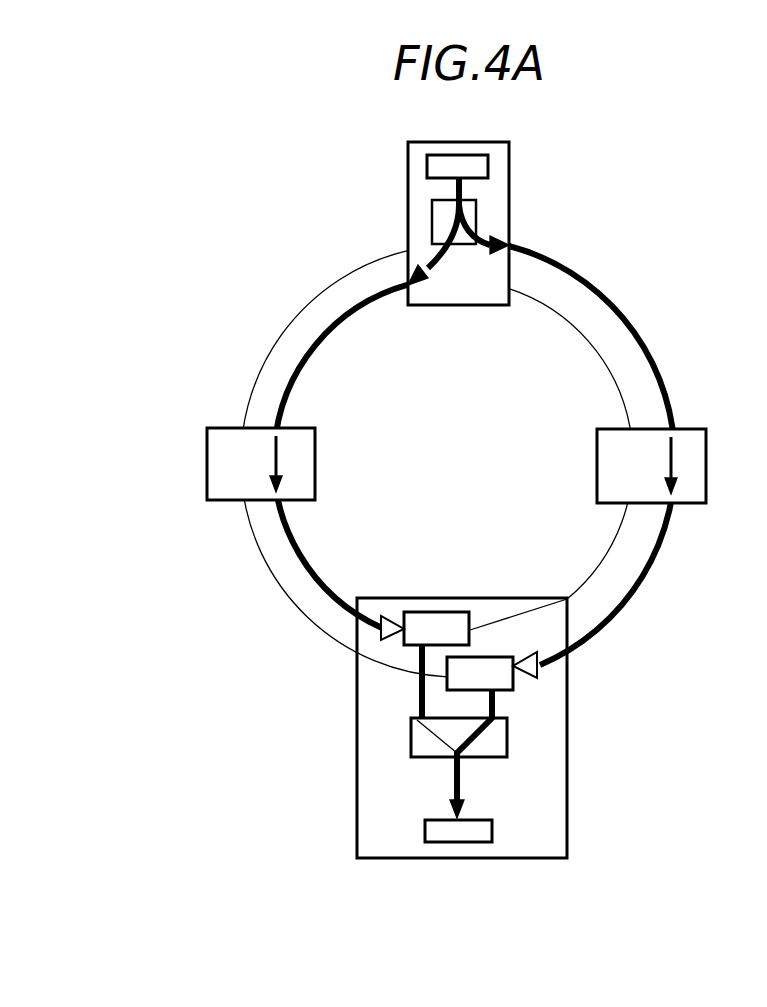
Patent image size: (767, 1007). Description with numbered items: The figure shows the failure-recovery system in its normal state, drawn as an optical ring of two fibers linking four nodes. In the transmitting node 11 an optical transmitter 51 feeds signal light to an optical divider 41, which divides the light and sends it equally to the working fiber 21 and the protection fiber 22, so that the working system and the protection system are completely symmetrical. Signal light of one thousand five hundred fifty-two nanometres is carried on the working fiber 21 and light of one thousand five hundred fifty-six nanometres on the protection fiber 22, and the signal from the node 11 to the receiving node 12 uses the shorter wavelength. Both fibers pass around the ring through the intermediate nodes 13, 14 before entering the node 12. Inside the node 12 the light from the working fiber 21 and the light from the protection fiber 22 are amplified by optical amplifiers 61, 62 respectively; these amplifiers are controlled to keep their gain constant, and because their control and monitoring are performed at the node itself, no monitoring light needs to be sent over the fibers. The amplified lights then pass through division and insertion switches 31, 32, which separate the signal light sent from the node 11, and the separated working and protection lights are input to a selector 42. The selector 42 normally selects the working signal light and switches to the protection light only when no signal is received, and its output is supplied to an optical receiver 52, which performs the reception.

The node 11 is at (458, 206).
The node 12 is at (506, 728).
The node 13 is at (229, 464).
The node 14 is at (616, 461).
The working fiber 21 is at (632, 455).
The protection fiber 22 is at (374, 456).
The division and insertion switch 31 is at (493, 672).
The division and insertion switch 32 is at (430, 627).
The optical divider 41 is at (443, 220).
The selector 42 is at (420, 752).
The optical transmitter 51 is at (487, 167).
The optical receiver 52 is at (488, 829).
The optical amplifier 61 is at (540, 666).
The optical amplifier 62 is at (381, 634).